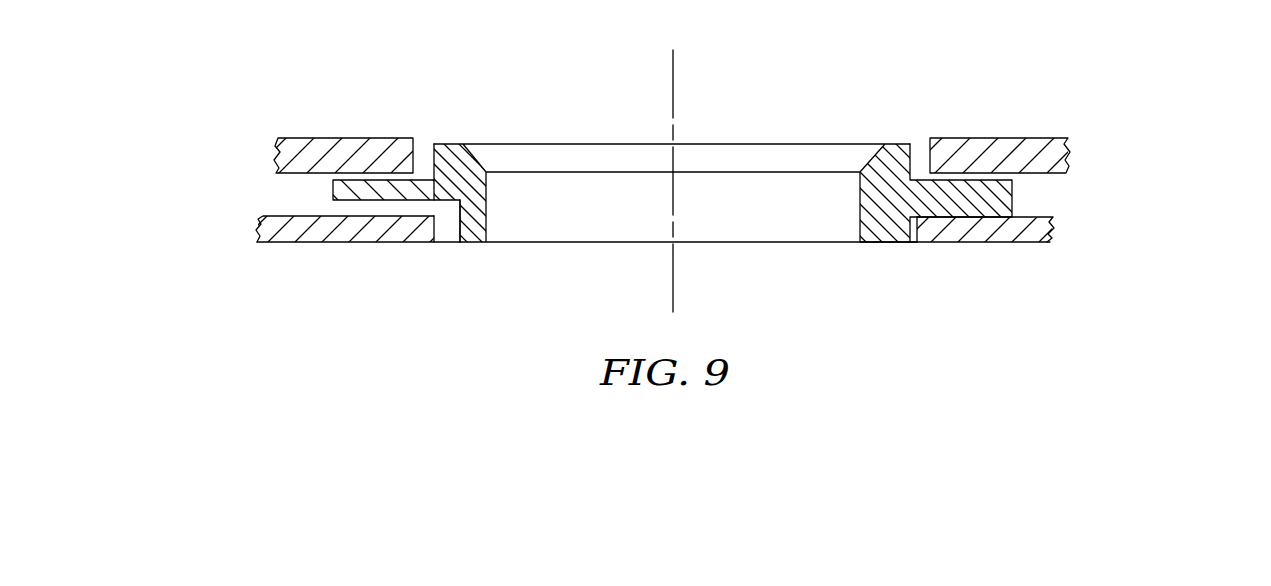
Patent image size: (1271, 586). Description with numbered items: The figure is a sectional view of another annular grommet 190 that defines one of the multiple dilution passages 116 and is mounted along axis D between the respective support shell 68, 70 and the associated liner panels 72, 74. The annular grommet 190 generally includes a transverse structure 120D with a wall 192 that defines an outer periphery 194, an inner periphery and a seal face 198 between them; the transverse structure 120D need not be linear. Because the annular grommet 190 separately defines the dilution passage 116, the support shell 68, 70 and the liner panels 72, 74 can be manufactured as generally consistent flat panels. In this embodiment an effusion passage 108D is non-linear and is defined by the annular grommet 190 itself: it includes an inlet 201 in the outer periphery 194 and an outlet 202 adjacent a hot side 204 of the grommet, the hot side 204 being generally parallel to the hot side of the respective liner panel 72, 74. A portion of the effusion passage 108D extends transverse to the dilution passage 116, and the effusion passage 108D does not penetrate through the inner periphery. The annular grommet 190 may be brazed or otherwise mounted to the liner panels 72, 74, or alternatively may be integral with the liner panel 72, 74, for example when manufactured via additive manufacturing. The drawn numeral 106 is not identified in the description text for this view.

The lower plate 106 is at (282, 203).
The effusion passage 108D is at (442, 210).
The dilution passage 116 is at (580, 163).
The transverse structure 120D is at (313, 195).
The annular grommet 190 is at (905, 135).
The wall 192 is at (898, 165).
The outer periphery 194 is at (843, 148).
The seal face 198 is at (998, 172).
The inlet 201 is at (330, 205).
The outlet 202 is at (448, 237).
The hot side 204 is at (895, 237).
The support shell 68 is at (1065, 123).
The support shell 70 is at (1065, 123).
The liner panel 72 is at (1052, 231).
The liner panel 74 is at (1044, 232).
The axis D is at (675, 83).